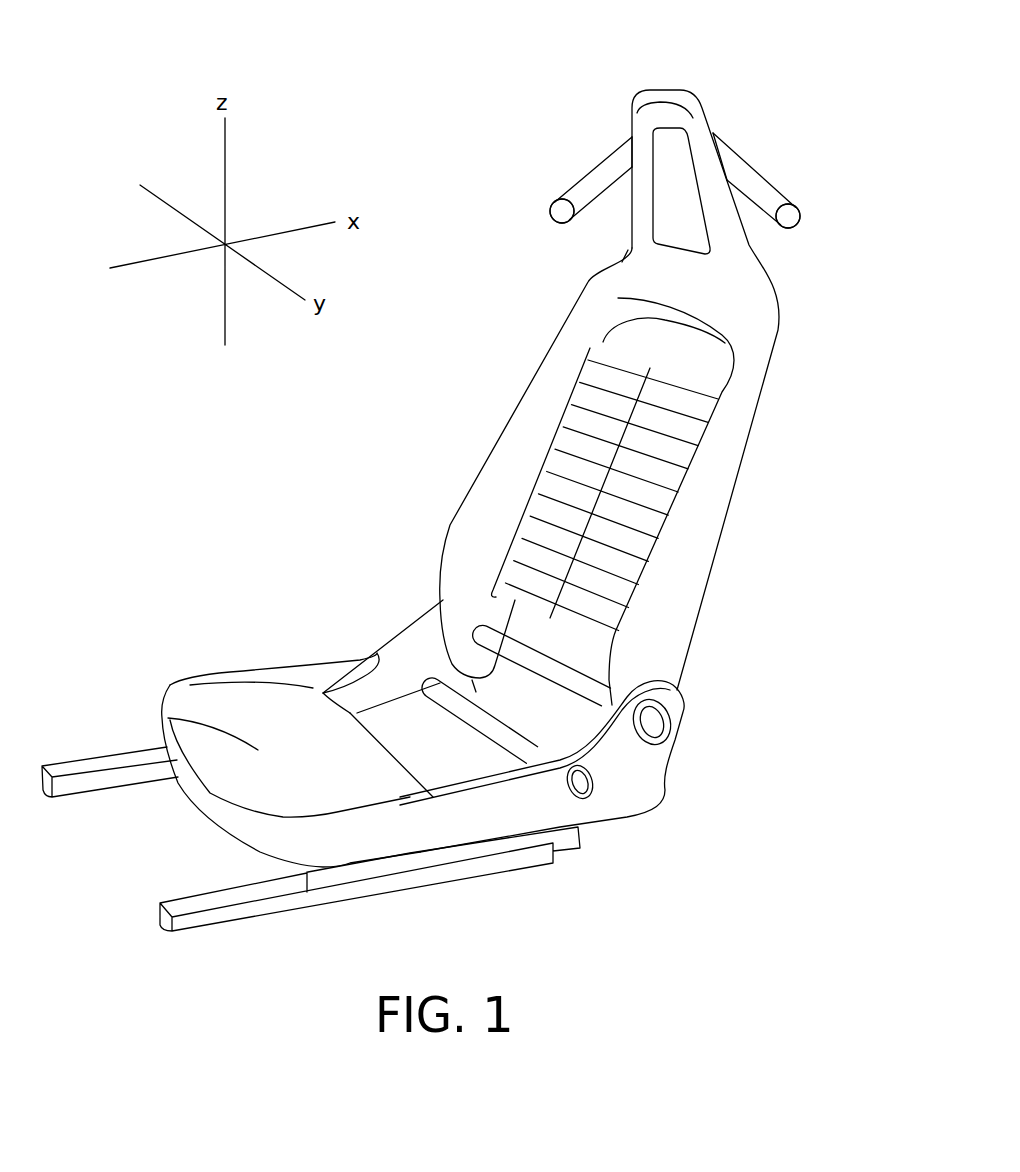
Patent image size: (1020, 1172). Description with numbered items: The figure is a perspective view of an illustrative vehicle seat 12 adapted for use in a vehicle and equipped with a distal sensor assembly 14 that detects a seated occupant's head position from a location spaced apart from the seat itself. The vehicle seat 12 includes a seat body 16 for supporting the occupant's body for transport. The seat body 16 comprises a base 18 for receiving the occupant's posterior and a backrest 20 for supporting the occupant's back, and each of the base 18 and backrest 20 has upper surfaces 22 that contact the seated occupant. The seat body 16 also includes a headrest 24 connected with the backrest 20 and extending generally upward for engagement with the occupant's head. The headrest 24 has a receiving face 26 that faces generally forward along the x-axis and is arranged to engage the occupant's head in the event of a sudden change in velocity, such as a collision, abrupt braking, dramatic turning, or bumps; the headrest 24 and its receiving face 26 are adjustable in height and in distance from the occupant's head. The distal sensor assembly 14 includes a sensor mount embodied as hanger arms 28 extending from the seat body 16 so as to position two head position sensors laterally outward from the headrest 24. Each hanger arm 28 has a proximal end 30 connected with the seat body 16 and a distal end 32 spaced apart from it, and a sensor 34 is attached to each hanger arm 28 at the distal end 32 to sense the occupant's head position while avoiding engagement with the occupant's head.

The vehicle seat 12 is at (818, 352).
The distal sensor assembly 14 is at (568, 125).
The seat body 16 is at (723, 470).
The base 18 is at (225, 690).
The backrest 20 is at (498, 457).
The upper surfaces 22 is at (553, 540).
The headrest 24 is at (694, 74).
The receiving face 26 is at (666, 147).
The hanger arms 28 is at (570, 166).
The proximal end 30 is at (620, 132).
The distal end 32 is at (550, 190).
The sensor 34 is at (550, 214).